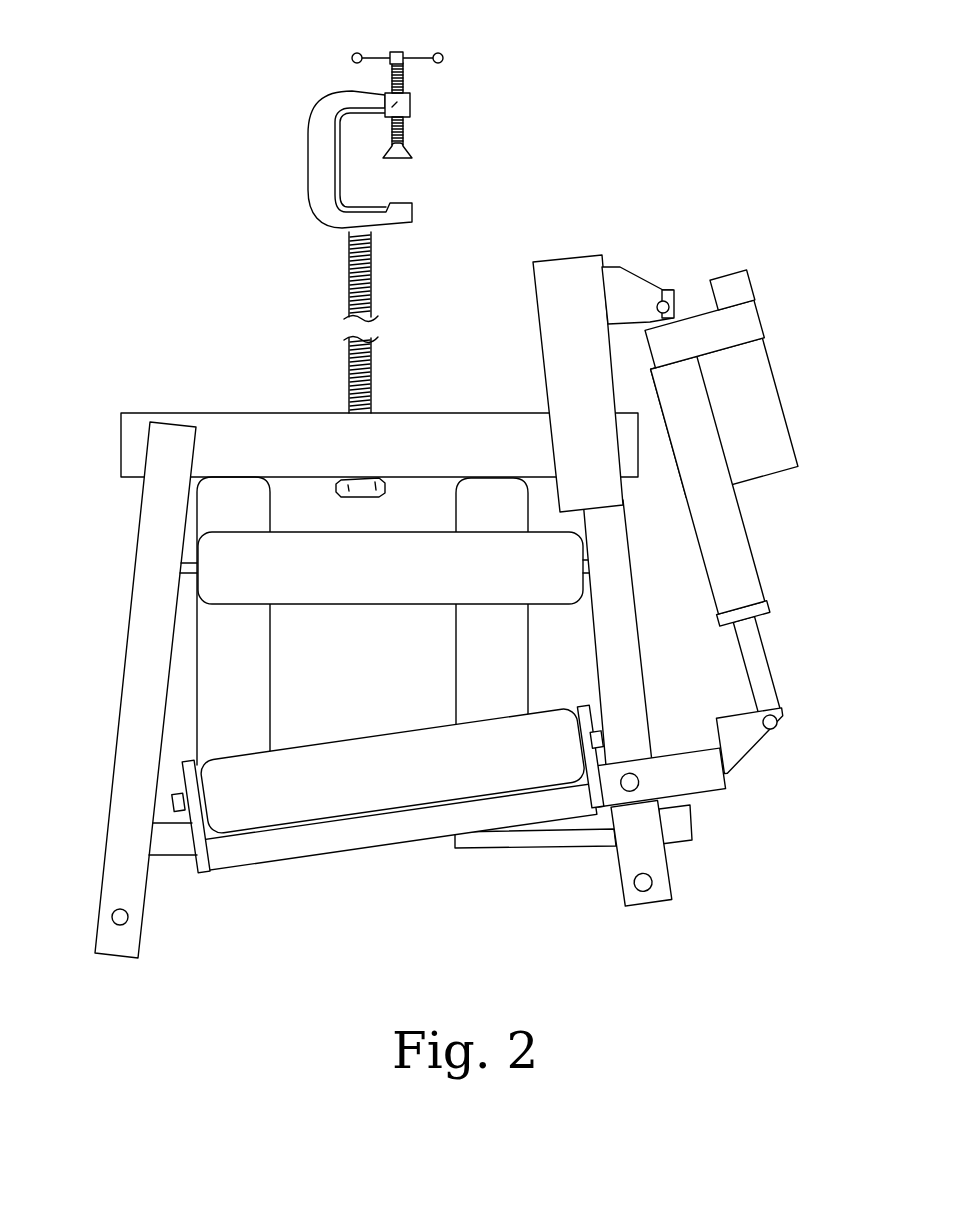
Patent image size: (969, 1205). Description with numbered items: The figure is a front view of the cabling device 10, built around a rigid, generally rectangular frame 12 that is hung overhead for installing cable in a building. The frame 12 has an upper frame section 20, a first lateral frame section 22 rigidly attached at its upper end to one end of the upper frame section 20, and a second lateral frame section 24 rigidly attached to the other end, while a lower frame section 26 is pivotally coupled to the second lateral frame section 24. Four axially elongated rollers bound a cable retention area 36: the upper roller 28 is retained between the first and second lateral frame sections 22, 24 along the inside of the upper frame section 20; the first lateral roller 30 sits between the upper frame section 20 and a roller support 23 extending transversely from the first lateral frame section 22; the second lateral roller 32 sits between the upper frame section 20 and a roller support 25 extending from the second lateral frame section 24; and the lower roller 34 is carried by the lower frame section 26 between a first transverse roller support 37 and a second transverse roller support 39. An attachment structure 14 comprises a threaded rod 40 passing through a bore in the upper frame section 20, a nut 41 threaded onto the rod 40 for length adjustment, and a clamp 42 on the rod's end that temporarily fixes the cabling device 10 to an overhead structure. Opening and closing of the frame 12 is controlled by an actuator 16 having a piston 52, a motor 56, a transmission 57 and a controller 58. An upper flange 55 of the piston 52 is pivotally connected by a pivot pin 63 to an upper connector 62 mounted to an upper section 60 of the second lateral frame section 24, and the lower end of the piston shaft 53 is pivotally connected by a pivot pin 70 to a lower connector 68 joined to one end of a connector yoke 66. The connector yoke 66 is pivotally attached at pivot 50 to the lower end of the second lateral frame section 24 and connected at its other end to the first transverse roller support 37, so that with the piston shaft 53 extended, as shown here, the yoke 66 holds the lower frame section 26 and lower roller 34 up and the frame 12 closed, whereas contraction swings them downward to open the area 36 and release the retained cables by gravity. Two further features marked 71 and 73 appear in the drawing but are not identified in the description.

The cabling device 10 is at (172, 108).
The frame 12 is at (96, 400).
The attachment structure 14 is at (504, 172).
The actuator 16 is at (839, 295).
The upper frame section 20 is at (231, 428).
The first lateral frame section 22 is at (138, 722).
The roller support 23 is at (178, 843).
The second lateral frame section 24 is at (630, 672).
The roller support 25 is at (578, 835).
The lower frame section 26 is at (343, 842).
The upper roller 28 is at (375, 584).
The first lateral roller 30 is at (250, 709).
The second lateral roller 32 is at (510, 676).
The lower roller 34 is at (415, 785).
The cable retention area 36 is at (322, 726).
The first transverse roller support 37 is at (578, 705).
The second transverse roller support 39 is at (200, 872).
The threaded rod 40 is at (350, 262).
The nut 41 is at (388, 487).
The clamp 42 is at (312, 148).
The pivot 50 is at (640, 772).
The piston 52 is at (745, 555).
The piston shaft 53 is at (762, 663).
The upper flange 55 is at (660, 300).
The motor 56 is at (775, 410).
The transmission 57 is at (757, 320).
The controller 58 is at (731, 283).
The upper section 60 is at (558, 263).
The upper connector 62 is at (618, 272).
The pivot pin 63 is at (677, 307).
The connector yoke 66 is at (713, 782).
The lower connector 68 is at (757, 740).
The pivot pin 70 is at (778, 722).
The pivot pin 71 is at (653, 882).
The pivot pin 73 is at (128, 918).